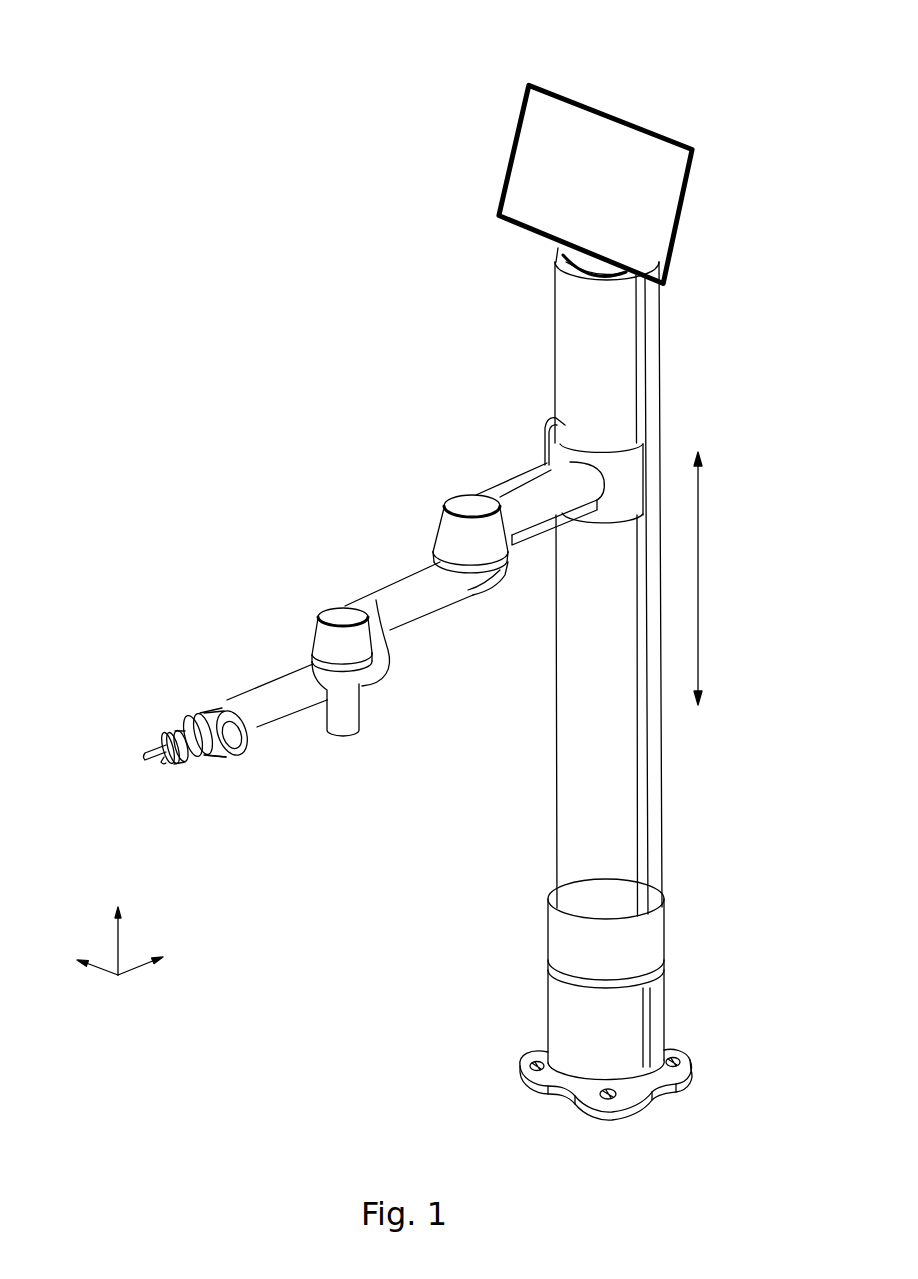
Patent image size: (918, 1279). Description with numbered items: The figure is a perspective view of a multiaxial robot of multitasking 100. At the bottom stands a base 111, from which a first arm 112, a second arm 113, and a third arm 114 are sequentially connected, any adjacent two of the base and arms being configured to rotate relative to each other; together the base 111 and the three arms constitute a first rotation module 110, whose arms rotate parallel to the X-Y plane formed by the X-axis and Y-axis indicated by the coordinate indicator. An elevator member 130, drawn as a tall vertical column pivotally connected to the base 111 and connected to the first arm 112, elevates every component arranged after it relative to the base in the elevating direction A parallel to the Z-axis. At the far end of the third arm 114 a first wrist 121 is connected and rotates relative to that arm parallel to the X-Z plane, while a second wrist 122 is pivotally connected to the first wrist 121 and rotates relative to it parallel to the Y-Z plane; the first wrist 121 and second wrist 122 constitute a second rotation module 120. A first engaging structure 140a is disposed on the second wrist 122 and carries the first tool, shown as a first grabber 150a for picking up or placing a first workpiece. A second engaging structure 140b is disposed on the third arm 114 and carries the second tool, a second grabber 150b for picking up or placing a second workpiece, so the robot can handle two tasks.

The multiaxial robot of multitasking 100 is at (174, 29).
The first rotation module 110 is at (470, 1046).
The base 111 is at (563, 1002).
The first arm 112 is at (530, 503).
The second arm 113 is at (378, 602).
The third arm 114 is at (275, 697).
The second rotation module 120 is at (197, 588).
The first wrist 121 is at (193, 735).
The second wrist 122 is at (190, 723).
The elevator member 130 is at (612, 765).
The first engaging structure 140a is at (165, 745).
The second engaging structure 140b is at (376, 600).
The first grabber 150a is at (143, 753).
The second grabber 150b is at (313, 666).